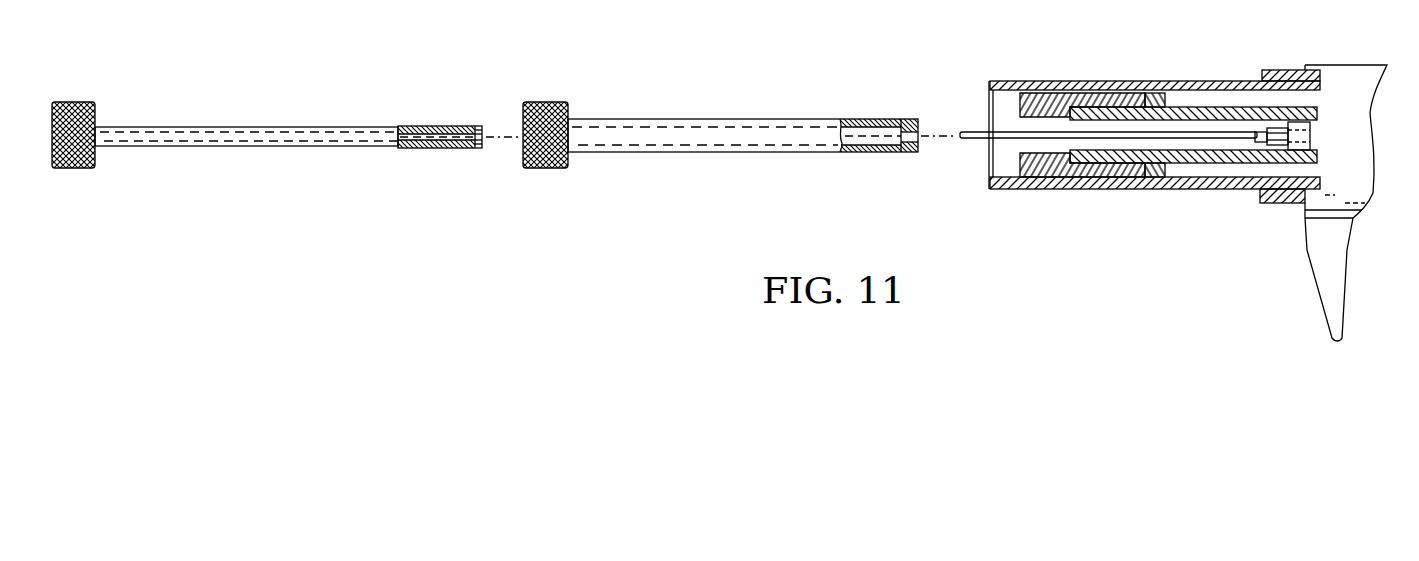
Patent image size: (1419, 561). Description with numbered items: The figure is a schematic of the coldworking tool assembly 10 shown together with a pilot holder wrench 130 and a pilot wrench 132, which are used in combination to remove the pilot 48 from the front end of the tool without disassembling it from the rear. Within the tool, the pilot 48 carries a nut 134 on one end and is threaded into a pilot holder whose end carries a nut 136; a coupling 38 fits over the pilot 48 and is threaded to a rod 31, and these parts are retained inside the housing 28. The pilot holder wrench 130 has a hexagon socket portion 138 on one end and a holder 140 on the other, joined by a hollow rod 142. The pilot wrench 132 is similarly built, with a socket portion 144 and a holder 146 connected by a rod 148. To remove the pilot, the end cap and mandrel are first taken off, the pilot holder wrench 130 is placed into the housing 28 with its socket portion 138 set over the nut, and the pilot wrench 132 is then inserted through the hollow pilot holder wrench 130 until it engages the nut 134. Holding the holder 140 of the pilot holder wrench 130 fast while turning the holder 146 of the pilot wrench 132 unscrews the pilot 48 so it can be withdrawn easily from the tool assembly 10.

The tool assembly 10 is at (1226, 40).
The housing 28 is at (1133, 87).
The rod 31 is at (1227, 108).
The coupling 38 is at (1063, 97).
The pilot 48 is at (980, 137).
The pilot holder wrench 130 is at (736, 134).
The pilot wrench 132 is at (286, 134).
The nut 134 is at (1262, 145).
The nut 136 is at (1292, 150).
The hexagon socket portion 138 is at (920, 127).
The holder 140 is at (545, 168).
The hollow rod 142 is at (740, 152).
The socket portion 144 is at (473, 128).
The holder 146 is at (83, 168).
The rod 148 is at (298, 146).